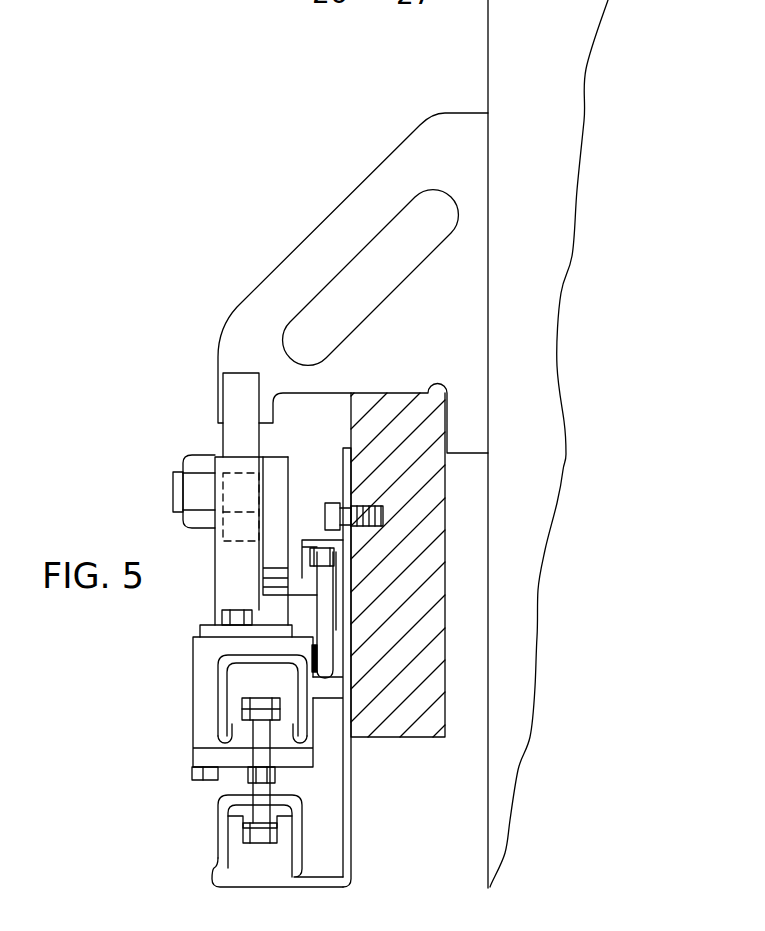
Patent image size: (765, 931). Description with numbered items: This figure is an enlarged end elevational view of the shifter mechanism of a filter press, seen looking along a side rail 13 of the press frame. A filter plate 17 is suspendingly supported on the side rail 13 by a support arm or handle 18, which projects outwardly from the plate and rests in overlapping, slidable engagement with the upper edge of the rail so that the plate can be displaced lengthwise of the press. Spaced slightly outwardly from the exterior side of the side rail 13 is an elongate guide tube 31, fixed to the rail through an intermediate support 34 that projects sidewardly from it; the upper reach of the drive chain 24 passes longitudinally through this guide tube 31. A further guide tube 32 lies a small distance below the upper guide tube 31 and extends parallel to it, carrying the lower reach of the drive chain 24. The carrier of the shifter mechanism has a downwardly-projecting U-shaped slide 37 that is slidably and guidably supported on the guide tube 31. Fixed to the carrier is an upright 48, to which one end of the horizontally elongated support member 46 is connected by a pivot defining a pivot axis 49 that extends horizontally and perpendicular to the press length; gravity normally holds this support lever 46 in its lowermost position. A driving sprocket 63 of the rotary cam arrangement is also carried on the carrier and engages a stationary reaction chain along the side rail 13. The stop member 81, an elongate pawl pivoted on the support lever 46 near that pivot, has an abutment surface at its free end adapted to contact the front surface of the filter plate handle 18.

The side rail 13 is at (440, 517).
The filter plate 17 is at (561, 296).
The support arm or handle 18 is at (242, 328).
The elongate flexible drive member 24 is at (210, 722).
The guide tube 31 is at (223, 688).
The further guide tube 32 is at (218, 842).
The intermediate support 34 is at (325, 712).
The U-shaped slide 37 is at (200, 645).
The support member 46 is at (283, 478).
The upright 48 is at (222, 582).
The pivot axis 49 is at (176, 488).
The driving sprocket 63 is at (320, 670).
The stop member 81 is at (233, 392).